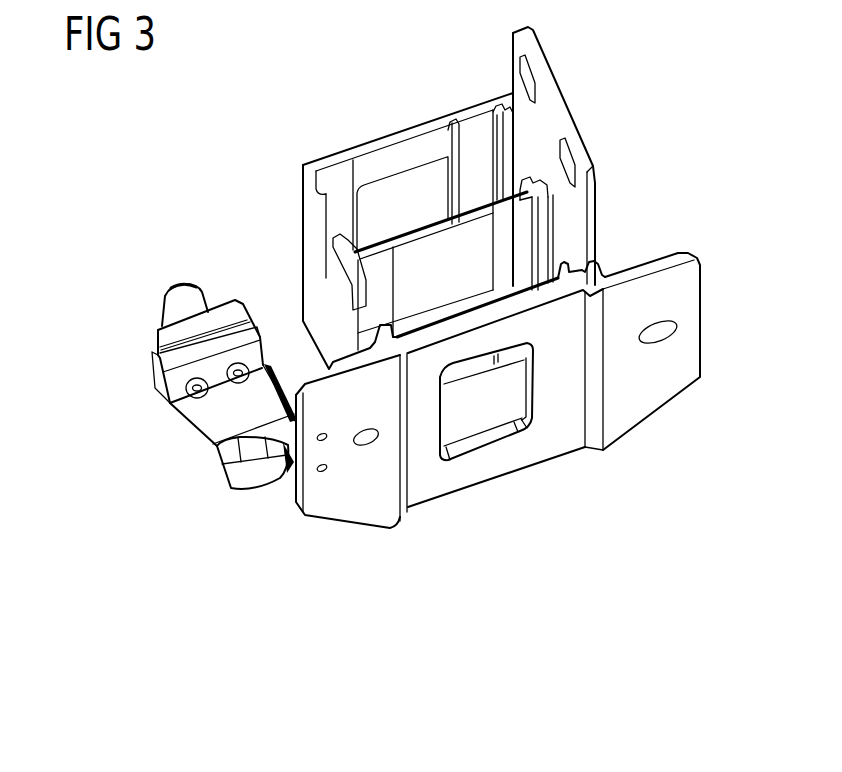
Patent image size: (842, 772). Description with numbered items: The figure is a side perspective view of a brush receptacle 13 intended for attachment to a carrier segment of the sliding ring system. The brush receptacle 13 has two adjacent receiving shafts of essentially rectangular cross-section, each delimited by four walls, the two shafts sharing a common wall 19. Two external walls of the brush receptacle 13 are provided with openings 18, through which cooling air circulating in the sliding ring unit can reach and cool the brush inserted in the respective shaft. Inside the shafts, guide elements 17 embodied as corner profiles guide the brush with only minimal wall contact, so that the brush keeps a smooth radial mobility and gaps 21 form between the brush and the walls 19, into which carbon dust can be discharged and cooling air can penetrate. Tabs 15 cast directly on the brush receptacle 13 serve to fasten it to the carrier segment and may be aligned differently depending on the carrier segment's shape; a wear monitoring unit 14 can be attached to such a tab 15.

The brush receptacle 13 is at (277, 257).
The wear monitoring unit 14 is at (140, 300).
The tab 15 is at (343, 498).
The guide element 17 is at (338, 191).
The opening 18 is at (412, 200).
The wall 19 is at (428, 482).
The gap 21 is at (592, 272).